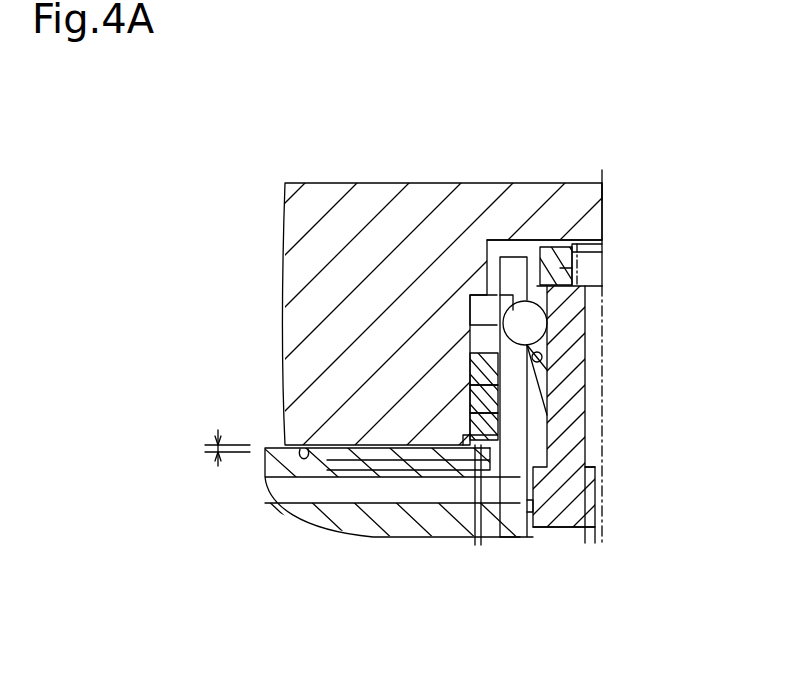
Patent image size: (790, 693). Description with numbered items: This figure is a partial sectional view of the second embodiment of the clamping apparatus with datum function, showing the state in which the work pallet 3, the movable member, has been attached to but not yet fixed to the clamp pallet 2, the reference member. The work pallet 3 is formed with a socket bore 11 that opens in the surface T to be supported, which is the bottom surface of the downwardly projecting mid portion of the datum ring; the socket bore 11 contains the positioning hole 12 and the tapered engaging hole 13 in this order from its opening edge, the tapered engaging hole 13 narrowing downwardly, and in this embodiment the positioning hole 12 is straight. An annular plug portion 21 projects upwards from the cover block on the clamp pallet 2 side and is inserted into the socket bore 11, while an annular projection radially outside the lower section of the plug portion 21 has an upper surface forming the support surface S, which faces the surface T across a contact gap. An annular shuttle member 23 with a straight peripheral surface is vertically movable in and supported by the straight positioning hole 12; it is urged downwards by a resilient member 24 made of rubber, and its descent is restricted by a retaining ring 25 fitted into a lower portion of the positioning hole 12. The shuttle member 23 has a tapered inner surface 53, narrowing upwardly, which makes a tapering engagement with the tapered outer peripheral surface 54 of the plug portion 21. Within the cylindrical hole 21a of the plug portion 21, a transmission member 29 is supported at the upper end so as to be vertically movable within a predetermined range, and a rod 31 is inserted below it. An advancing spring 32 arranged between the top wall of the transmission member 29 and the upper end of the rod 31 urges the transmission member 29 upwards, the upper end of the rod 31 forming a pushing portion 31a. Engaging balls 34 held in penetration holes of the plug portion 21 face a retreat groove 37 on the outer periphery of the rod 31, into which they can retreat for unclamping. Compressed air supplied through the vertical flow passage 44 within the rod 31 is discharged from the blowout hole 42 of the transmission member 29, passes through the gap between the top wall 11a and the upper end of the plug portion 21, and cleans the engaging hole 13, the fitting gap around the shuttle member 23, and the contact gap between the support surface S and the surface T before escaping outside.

The clamp pallet 2 is at (374, 551).
The work pallet 3 is at (372, 169).
The socket bore 11 is at (520, 237).
The top wall 11a is at (603, 197).
The positioning hole 12 is at (470, 410).
The tapered engaging hole 13 is at (472, 327).
The plug portion 21 is at (528, 224).
The cylindrical hole 21a is at (588, 470).
The shuttle member 23 is at (452, 426).
The resilient member 24 is at (470, 375).
The retaining ring 25 is at (472, 510).
The transmission member 29 is at (582, 244).
The rod 31 is at (586, 540).
The pushing portion 31a is at (588, 290).
The advancing spring 32 is at (588, 262).
The engaging ball 34 is at (487, 293).
The retreat groove 37 is at (560, 345).
The blowout hole 42 is at (556, 246).
The vertical flow passage 44 is at (590, 420).
The tapered inner surface 53 is at (505, 505).
The tapered outer peripheral surface 54 is at (565, 367).
The support surface S is at (272, 444).
The surface to be supported T is at (287, 398).